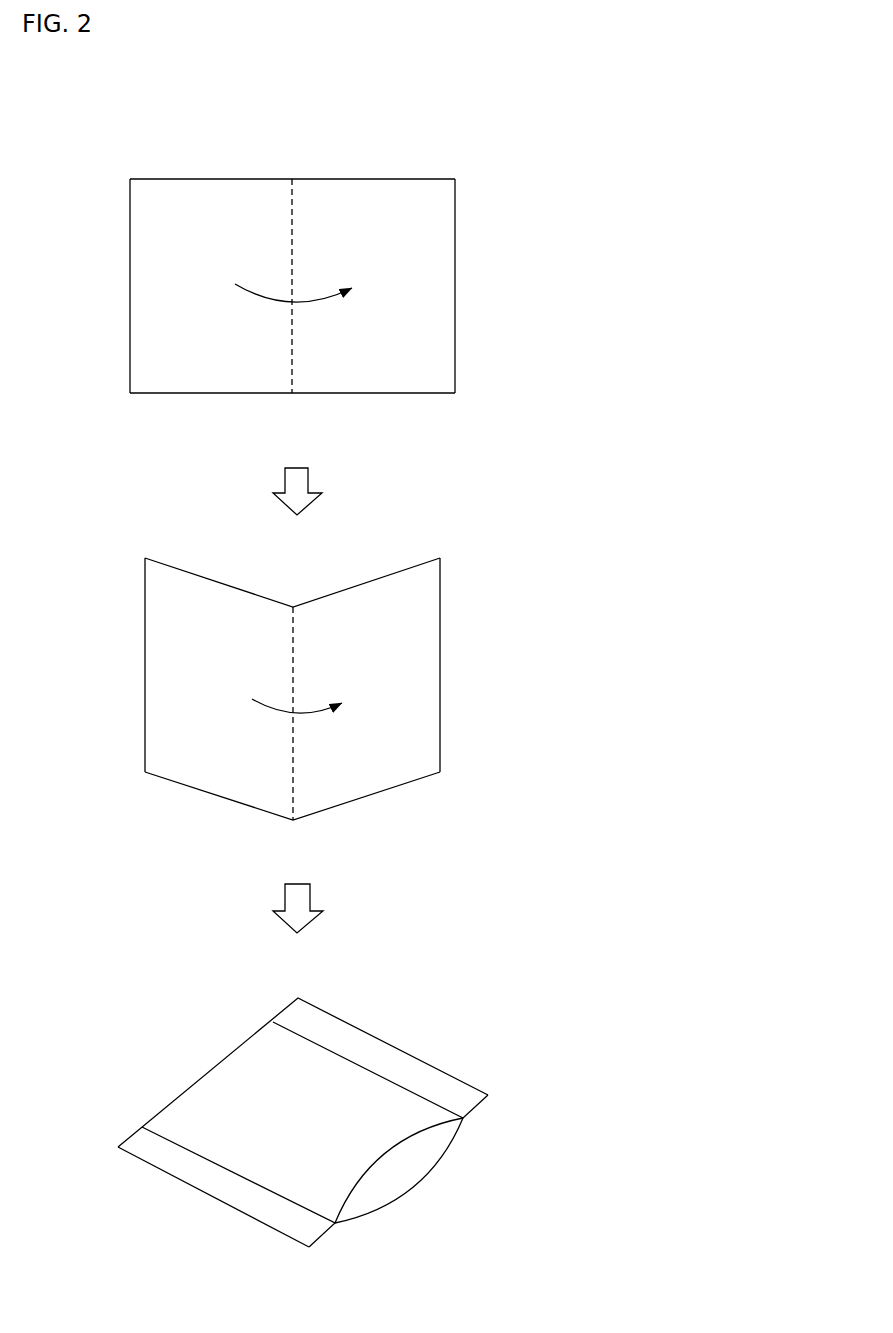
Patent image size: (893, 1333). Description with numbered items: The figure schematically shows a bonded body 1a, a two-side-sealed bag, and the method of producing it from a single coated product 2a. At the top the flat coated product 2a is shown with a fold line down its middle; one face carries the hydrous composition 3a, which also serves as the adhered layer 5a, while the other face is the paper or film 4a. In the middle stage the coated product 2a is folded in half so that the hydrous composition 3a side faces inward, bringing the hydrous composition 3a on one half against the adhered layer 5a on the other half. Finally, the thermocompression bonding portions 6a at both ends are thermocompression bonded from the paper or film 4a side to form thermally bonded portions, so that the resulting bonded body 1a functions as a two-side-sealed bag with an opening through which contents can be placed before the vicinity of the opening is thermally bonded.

The bonded body 1a is at (303, 1080).
The coated product 2a is at (499, 144).
The hydrous composition 3a is at (156, 257).
The paper or film 4a is at (216, 1084).
The adhered layer 5a is at (434, 257).
The thermocompression bonding portion 6a is at (371, 1044).